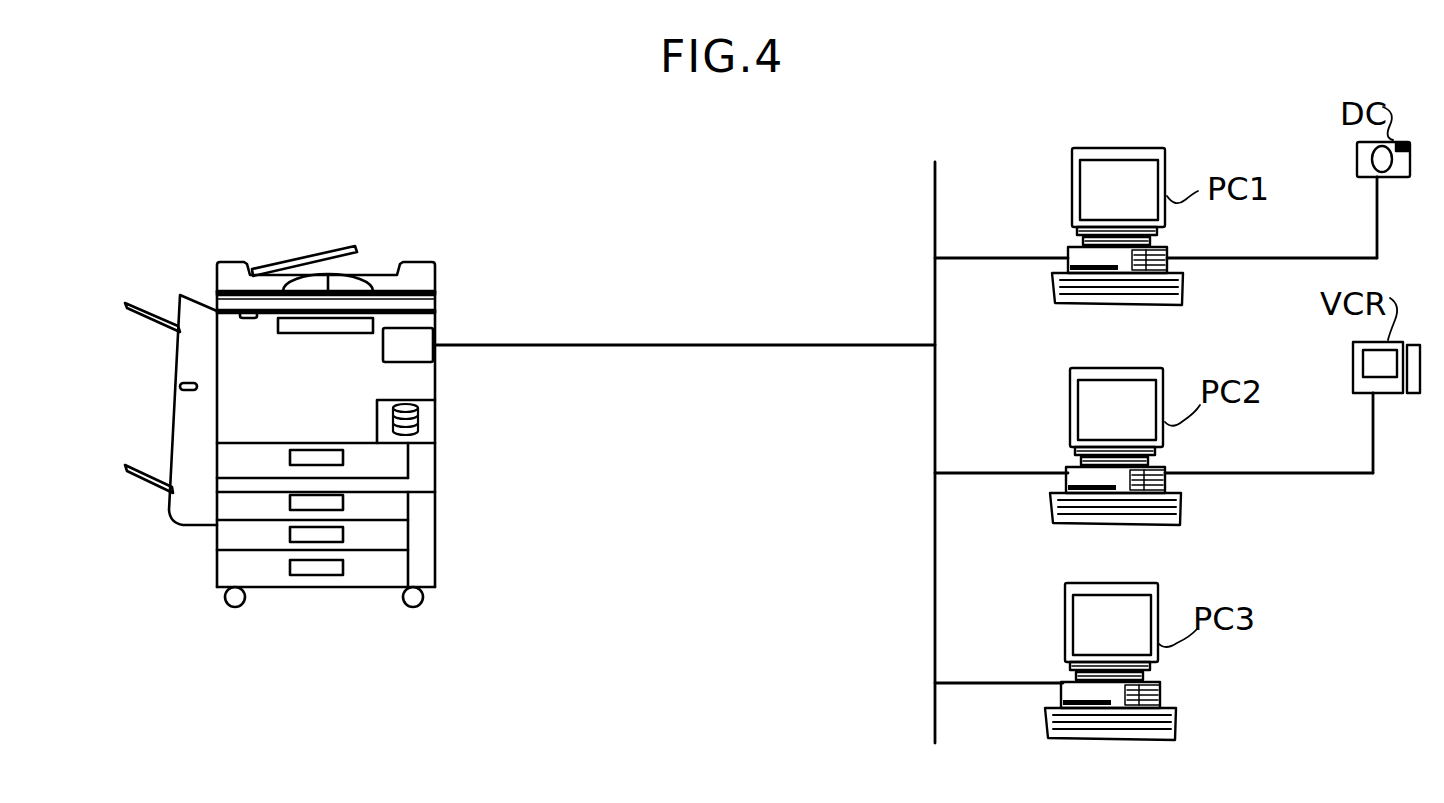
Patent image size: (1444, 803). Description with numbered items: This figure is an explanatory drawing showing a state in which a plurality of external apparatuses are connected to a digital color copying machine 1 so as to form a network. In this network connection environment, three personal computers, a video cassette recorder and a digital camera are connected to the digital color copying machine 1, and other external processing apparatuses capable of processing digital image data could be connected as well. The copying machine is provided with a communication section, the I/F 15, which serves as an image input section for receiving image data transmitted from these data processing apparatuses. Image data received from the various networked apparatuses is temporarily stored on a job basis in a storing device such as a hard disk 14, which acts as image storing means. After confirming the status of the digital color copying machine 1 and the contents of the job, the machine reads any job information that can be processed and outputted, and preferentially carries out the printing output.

The digital color copying machine 1 is at (320, 380).
The hard disk 14 is at (420, 417).
The I/F 15 is at (413, 363).